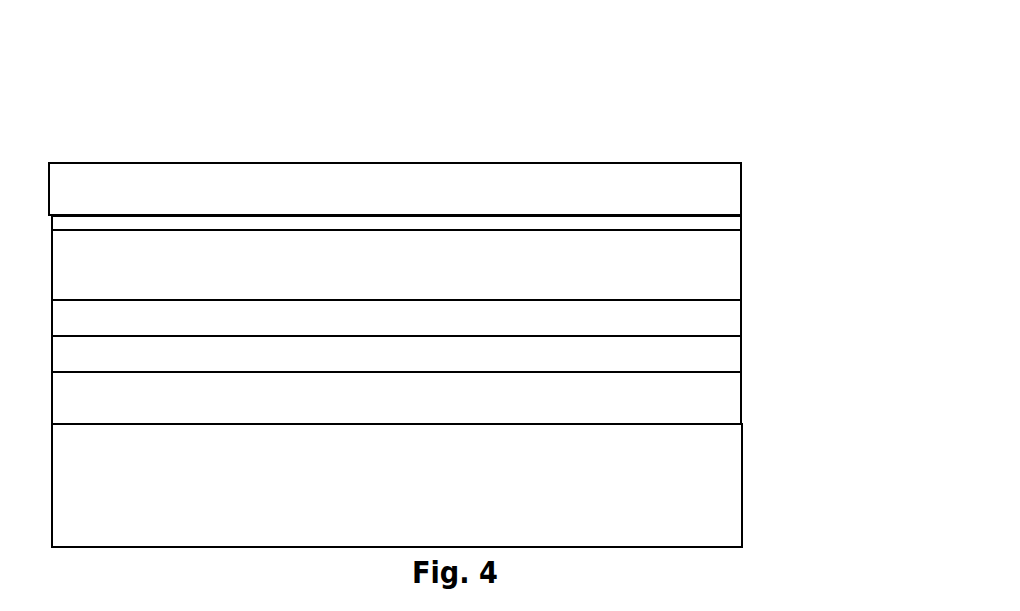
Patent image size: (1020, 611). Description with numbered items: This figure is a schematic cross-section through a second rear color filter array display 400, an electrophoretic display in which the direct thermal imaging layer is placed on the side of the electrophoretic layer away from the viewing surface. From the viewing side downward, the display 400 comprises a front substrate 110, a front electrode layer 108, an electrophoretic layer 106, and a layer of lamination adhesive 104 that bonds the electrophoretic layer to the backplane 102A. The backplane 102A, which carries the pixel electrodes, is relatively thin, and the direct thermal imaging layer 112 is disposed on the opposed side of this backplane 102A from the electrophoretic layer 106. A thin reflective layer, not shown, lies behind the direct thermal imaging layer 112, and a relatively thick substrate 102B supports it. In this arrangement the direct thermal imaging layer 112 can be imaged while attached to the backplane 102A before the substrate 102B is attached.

The second rear color filter array display 400 is at (488, 126).
The front substrate 110 is at (687, 186).
The front electrode layer 108 is at (682, 225).
The electrophoretic layer 106 is at (685, 274).
The layer of lamination adhesive 104 is at (680, 323).
The backplane 102A is at (680, 358).
The direct thermal imaging layer 112 is at (656, 397).
The substrate 102B is at (680, 497).